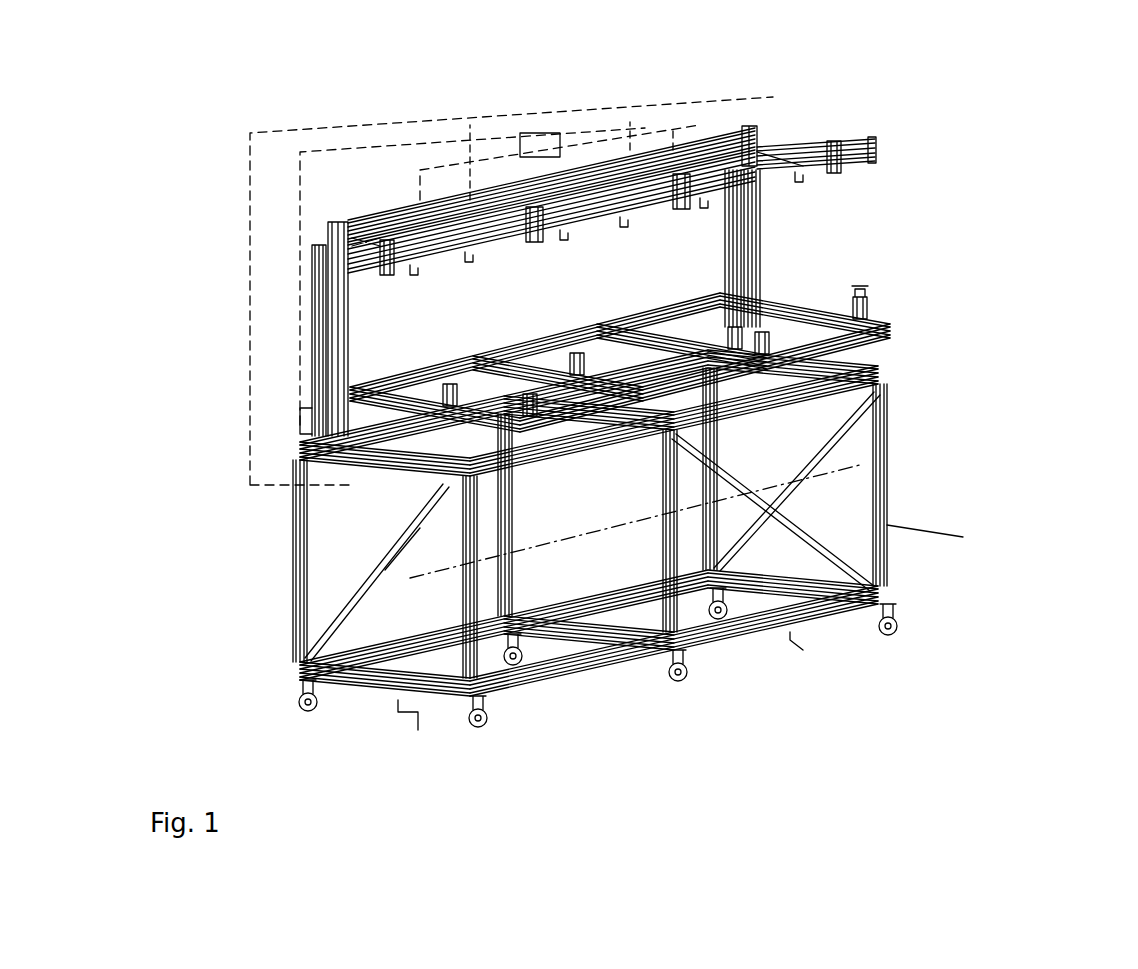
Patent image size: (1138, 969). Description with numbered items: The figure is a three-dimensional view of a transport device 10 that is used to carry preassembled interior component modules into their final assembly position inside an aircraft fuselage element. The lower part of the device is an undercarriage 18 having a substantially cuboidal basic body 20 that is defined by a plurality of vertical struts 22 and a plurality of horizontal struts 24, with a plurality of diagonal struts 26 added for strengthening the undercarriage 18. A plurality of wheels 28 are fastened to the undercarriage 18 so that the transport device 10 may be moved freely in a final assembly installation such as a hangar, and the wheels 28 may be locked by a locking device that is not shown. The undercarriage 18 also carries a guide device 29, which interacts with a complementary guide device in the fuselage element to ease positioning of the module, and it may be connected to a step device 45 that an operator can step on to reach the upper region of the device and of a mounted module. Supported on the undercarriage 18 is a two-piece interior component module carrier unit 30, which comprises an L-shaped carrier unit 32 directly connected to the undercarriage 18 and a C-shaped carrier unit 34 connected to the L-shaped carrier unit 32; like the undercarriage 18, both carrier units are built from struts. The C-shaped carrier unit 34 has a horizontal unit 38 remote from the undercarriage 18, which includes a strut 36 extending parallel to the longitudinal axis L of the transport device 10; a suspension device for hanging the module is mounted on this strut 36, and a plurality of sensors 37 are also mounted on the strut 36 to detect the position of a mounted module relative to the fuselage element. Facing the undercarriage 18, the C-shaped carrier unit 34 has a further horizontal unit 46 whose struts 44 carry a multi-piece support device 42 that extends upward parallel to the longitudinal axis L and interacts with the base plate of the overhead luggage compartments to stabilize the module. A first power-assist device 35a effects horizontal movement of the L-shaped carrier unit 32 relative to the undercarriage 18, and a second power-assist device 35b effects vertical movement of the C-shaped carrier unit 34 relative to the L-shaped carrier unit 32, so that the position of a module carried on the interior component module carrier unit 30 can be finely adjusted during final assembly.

The transport device 10 is at (1013, 287).
The undercarriage 18 is at (884, 467).
The longitudinal axis L is at (887, 452).
The basic body 20 is at (338, 562).
The vertical struts 22 is at (885, 399).
The horizontal struts 24 is at (600, 450).
The diagonal struts 26 is at (392, 557).
The wheels 28 is at (312, 714).
The guide device 29 is at (418, 730).
The interior component module carrier unit 30 is at (922, 190).
The L-shaped carrier unit 32 is at (324, 330).
The C-shaped carrier unit 34 is at (785, 152).
The first power-assist device 35a is at (399, 555).
The second power-assist device 35b is at (300, 421).
The strut 36 is at (408, 228).
The sensors 37 is at (414, 277).
The horizontal unit 38 is at (770, 139).
The support device 42 is at (452, 381).
The struts 44 is at (386, 390).
The step device 45 is at (540, 131).
The horizontal unit 46 is at (898, 326).